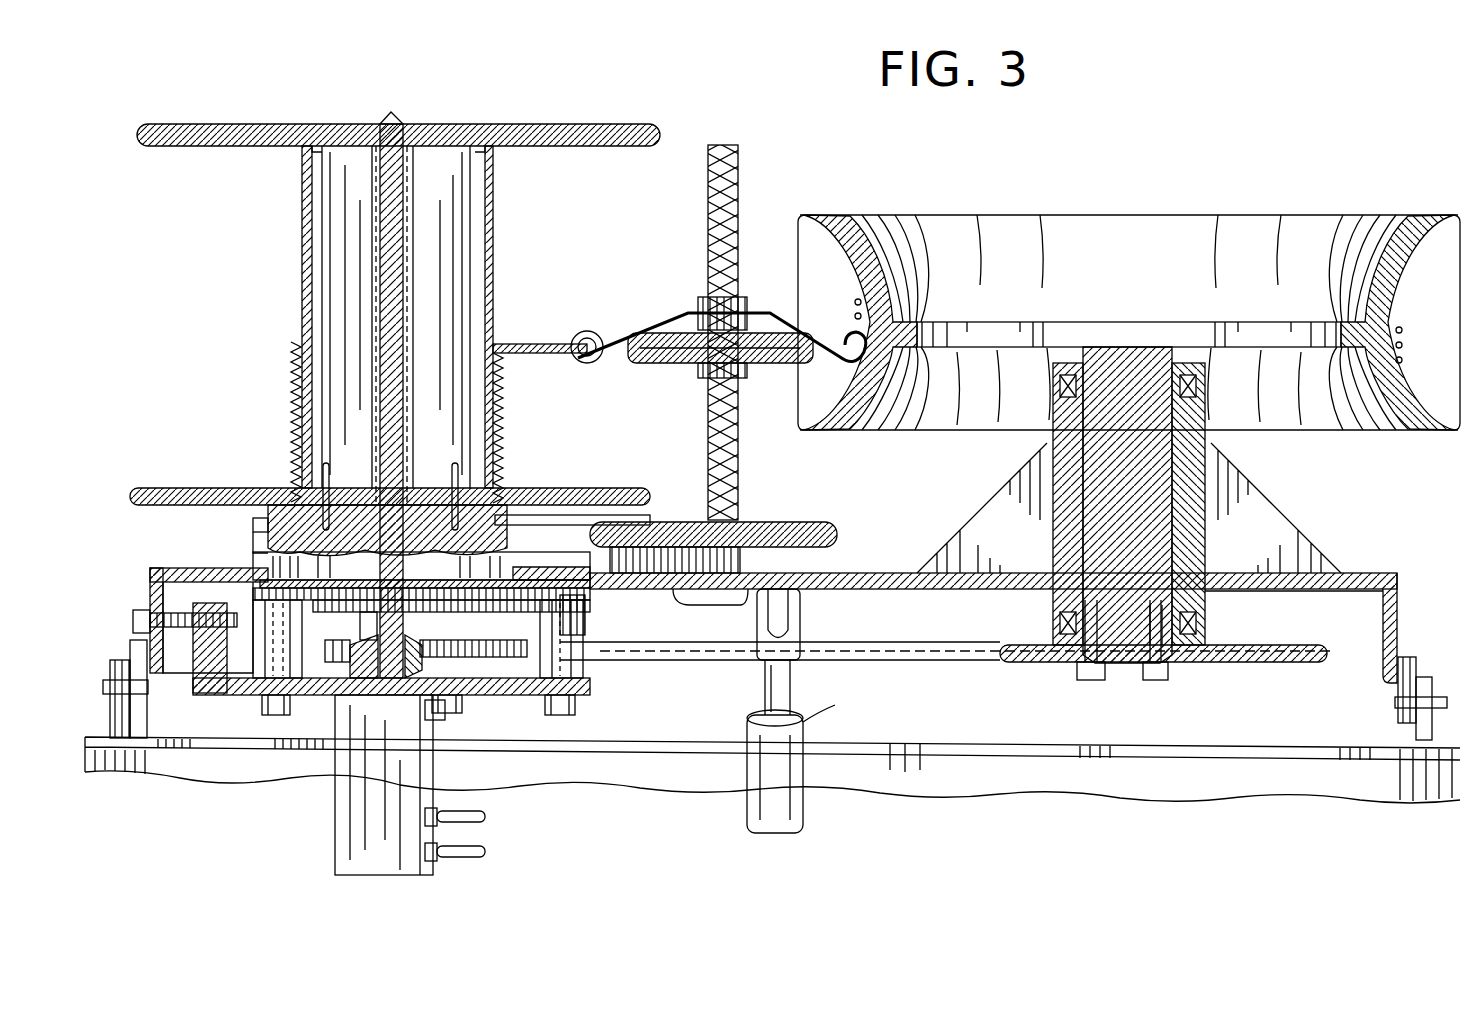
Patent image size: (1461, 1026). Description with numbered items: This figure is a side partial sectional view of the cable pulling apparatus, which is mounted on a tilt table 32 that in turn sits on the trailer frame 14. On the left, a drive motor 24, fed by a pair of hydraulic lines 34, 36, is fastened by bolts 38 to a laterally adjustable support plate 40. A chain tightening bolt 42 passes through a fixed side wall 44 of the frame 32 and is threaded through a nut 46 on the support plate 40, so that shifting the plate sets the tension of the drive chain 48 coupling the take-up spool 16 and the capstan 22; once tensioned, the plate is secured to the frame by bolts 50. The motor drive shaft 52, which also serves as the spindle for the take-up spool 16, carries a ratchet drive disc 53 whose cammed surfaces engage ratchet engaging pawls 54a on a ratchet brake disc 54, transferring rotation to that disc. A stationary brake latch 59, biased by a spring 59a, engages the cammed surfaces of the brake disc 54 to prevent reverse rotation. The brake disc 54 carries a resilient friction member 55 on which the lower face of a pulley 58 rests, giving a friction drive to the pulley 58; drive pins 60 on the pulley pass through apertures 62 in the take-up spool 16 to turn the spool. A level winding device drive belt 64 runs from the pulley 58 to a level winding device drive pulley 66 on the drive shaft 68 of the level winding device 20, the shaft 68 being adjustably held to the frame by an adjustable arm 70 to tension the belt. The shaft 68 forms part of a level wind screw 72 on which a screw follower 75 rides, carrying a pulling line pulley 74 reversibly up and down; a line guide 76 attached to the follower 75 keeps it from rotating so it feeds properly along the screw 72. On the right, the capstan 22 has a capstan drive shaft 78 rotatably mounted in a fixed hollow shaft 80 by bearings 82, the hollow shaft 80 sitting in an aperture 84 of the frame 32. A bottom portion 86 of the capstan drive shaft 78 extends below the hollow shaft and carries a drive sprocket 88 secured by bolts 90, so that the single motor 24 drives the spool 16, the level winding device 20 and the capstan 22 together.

The frame 14 is at (1352, 798).
The take-up spool 16 is at (503, 125).
The level winding device 20 is at (784, 152).
The capstan 22 is at (1176, 214).
The drive motor 24 is at (433, 870).
The tilt table 32 is at (1393, 573).
The hydraulic line 34 is at (490, 851).
The hydraulic line 36 is at (490, 816).
The bolts 38 is at (433, 725).
The support plate 40 is at (245, 692).
The chain tightening bolt 42 is at (133, 620).
The fixed side wall 44 is at (140, 612).
The nut 46 is at (170, 660).
The drive chain 48 is at (720, 662).
The bolts 50 is at (575, 705).
The motor drive shaft 52 is at (455, 698).
The ratchet drive disc 53 is at (460, 613).
The ratchet brake disc 54 is at (250, 585).
The ratchet engaging pawls 54a is at (323, 612).
The resilient friction member 55 is at (298, 506).
The pulley 58 is at (490, 508).
The brake latch 59 is at (548, 568).
The spring 59a is at (585, 625).
The drive pins 60 is at (500, 462).
The apertures 62 is at (462, 500).
The level winding device drive belt 64 is at (576, 513).
The level winding device drive pulley 66 is at (815, 524).
The drive shaft 68 is at (748, 527).
The adjustable arm 70 is at (680, 598).
The level wind screw 72 is at (707, 212).
The pulling line pulley 74 is at (680, 318).
The screw follower 75 is at (738, 322).
The line guide 76 is at (587, 330).
The capstan drive shaft 78 is at (1160, 480).
The hollow shaft 80 is at (1205, 515).
The bearings 82 is at (1205, 405).
The aperture 84 is at (1240, 591).
The bottom portion 86 is at (1165, 625).
The drive sprocket 88 is at (1020, 663).
The bolts 90 is at (1145, 682).